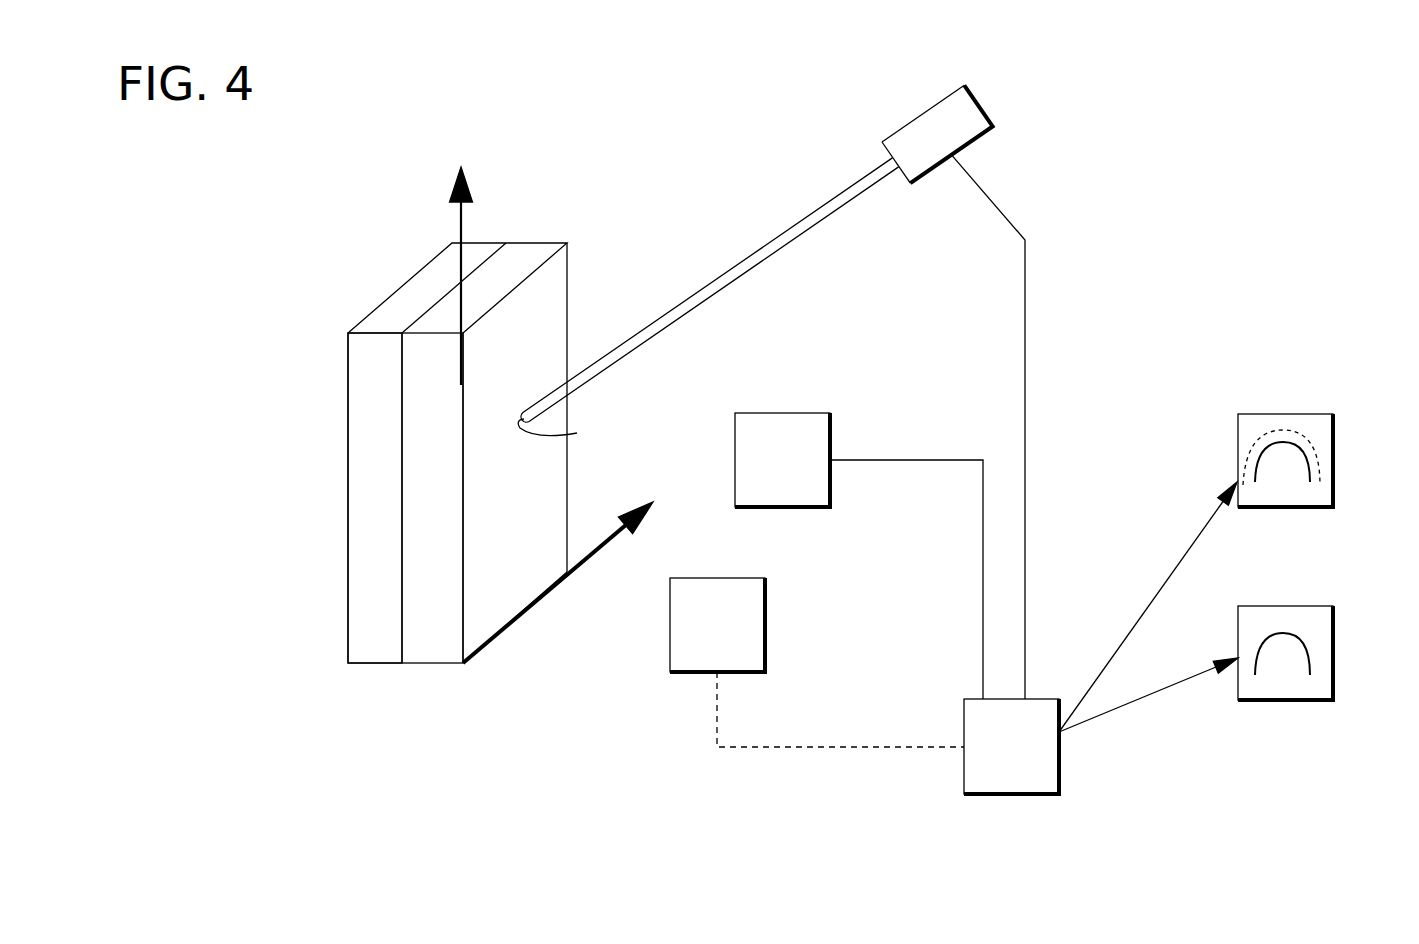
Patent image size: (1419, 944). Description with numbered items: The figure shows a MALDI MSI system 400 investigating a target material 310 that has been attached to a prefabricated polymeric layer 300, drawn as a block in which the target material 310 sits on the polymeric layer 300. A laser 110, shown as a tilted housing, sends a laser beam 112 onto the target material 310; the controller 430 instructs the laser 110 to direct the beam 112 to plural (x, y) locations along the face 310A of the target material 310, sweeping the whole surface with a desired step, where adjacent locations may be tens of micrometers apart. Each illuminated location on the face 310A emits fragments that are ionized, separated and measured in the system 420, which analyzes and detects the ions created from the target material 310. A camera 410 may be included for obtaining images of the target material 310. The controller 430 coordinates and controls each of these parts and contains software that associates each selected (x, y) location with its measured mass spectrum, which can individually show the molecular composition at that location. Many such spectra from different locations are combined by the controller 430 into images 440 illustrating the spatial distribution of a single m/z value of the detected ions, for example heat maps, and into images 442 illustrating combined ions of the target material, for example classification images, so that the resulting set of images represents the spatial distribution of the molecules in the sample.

The MALDI MSI system 400 is at (653, 37).
The laser 110 is at (920, 113).
The laser beam 112 is at (705, 285).
The polymeric layer 300 is at (372, 638).
The target material 310 is at (430, 355).
The face of the target material 310A is at (518, 586).
The camera 410 is at (817, 662).
The system to analyze and detect ions 420 is at (859, 556).
The controller 430 is at (1101, 638).
The single m/z value images 440 is at (1333, 643).
The combined ions images 442 is at (1333, 452).